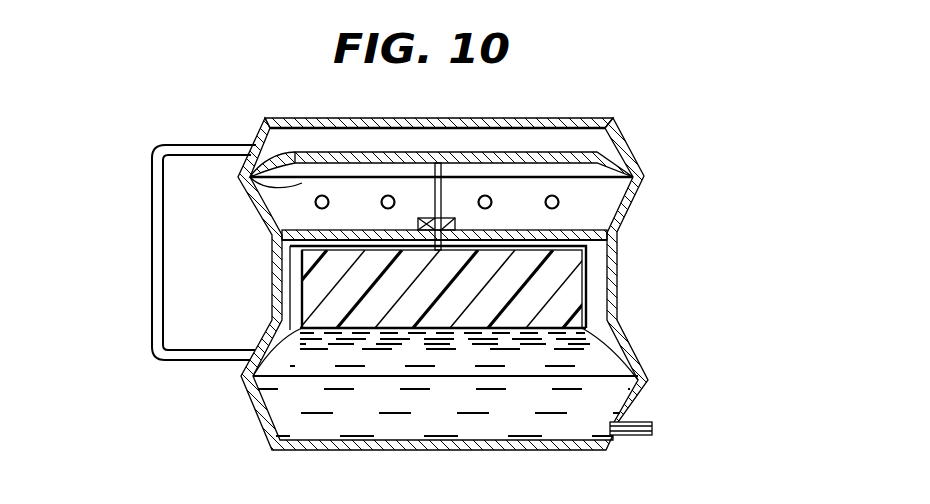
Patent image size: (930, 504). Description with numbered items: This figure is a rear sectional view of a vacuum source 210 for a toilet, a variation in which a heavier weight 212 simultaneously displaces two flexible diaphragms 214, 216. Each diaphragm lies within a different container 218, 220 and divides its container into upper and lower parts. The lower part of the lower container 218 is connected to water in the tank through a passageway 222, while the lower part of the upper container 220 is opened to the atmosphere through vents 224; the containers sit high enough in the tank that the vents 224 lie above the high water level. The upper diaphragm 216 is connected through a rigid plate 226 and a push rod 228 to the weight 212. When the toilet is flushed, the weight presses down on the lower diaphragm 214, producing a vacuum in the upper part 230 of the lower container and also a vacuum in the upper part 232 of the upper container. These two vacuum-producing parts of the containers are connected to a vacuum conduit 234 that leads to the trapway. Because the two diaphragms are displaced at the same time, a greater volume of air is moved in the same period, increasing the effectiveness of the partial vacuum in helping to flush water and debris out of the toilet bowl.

The vacuum source 210 is at (222, 118).
The weight 212 is at (586, 273).
The lower flexible diaphragm 214 is at (590, 343).
The upper flexible diaphragm 216 is at (613, 162).
The lower container 218 is at (632, 305).
The upper container 220 is at (656, 169).
The passageway 222 is at (646, 421).
The vents 224 is at (559, 204).
The rigid plate 226 is at (250, 178).
The push rod 228 is at (441, 196).
The upper part of the lower container 230 is at (290, 297).
The upper part of the upper container 232 is at (314, 137).
The vacuum conduit 234 is at (163, 349).